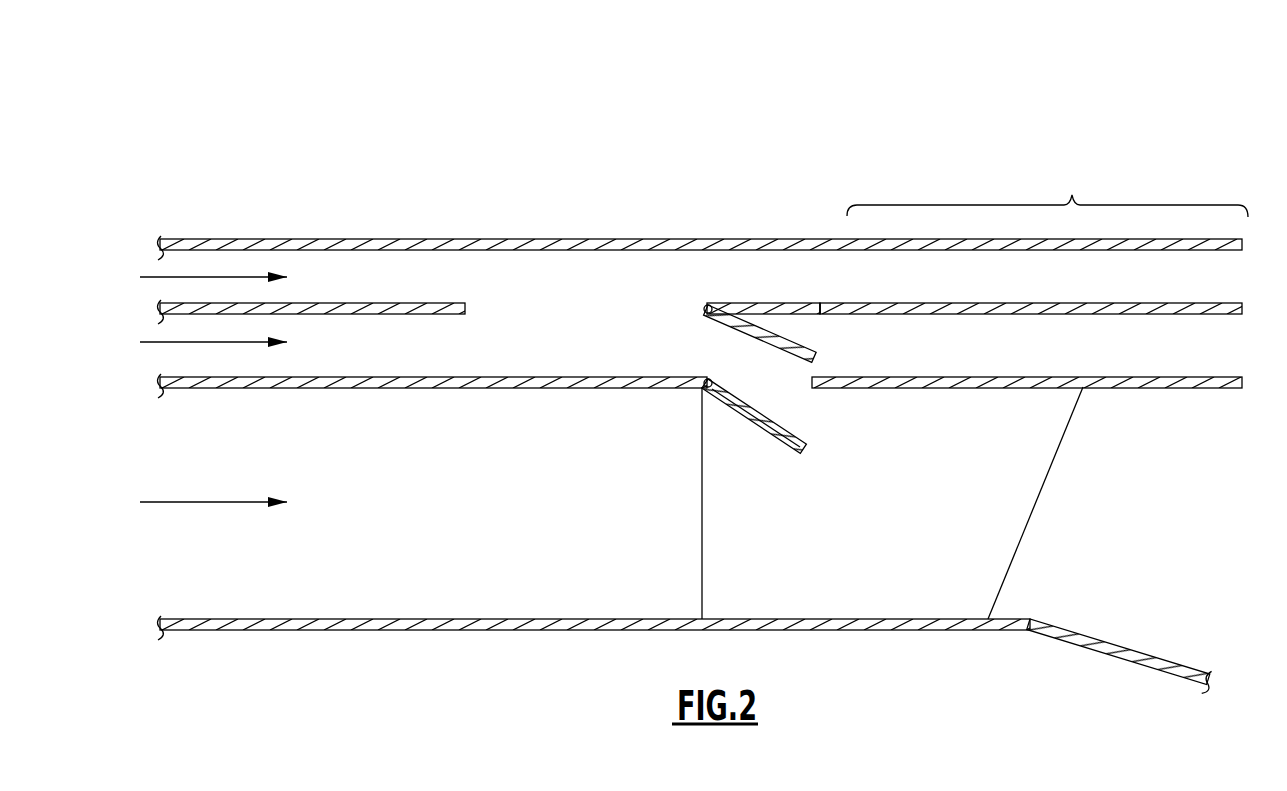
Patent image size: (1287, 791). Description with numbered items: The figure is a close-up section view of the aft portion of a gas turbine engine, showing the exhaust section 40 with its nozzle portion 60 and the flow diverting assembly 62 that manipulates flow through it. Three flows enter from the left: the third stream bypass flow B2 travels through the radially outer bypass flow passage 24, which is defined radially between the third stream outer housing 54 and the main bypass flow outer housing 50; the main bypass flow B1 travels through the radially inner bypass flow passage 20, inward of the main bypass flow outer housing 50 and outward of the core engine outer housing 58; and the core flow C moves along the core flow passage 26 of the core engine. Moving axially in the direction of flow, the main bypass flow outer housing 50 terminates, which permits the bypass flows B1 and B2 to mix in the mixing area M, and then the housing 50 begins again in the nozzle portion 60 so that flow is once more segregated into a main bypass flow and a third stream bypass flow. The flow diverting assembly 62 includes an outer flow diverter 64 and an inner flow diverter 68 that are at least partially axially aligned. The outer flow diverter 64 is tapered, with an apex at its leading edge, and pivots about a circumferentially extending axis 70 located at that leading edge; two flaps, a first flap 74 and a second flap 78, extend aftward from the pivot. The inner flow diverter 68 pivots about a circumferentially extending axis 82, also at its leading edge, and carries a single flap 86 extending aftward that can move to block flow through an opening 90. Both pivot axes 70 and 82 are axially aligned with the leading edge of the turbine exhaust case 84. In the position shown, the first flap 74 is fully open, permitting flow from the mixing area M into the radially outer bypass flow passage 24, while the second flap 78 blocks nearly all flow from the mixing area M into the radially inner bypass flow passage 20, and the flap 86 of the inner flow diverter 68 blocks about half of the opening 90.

The radially inner bypass flow passage 20 is at (1155, 340).
The radially outer bypass flow passage 24 is at (1177, 267).
The core flow passage 26 is at (1157, 513).
The exhaust section 40 is at (1148, 118).
The main bypass flow outer housing 50 is at (1006, 301).
The third stream outer housing 54 is at (1006, 236).
The core engine outer housing 58 is at (1006, 372).
The nozzle portion 60 is at (1047, 190).
The flow diverting assembly 62 is at (645, 315).
The outer flow diverter 64 is at (793, 303).
The inner flow diverter 68 is at (808, 434).
The circumferentially extending axis 70 is at (706, 305).
The first flap 74 is at (820, 303).
The second flap 78 is at (803, 344).
The circumferentially extending axis 82 is at (710, 379).
The turbine exhaust case 84 is at (1003, 510).
The flap 86 is at (784, 414).
The opening 90 is at (790, 390).
The main bypass flow B1 is at (198, 335).
The third stream bypass flow B2 is at (240, 277).
The core flow C is at (182, 500).
The mixing area M is at (560, 315).